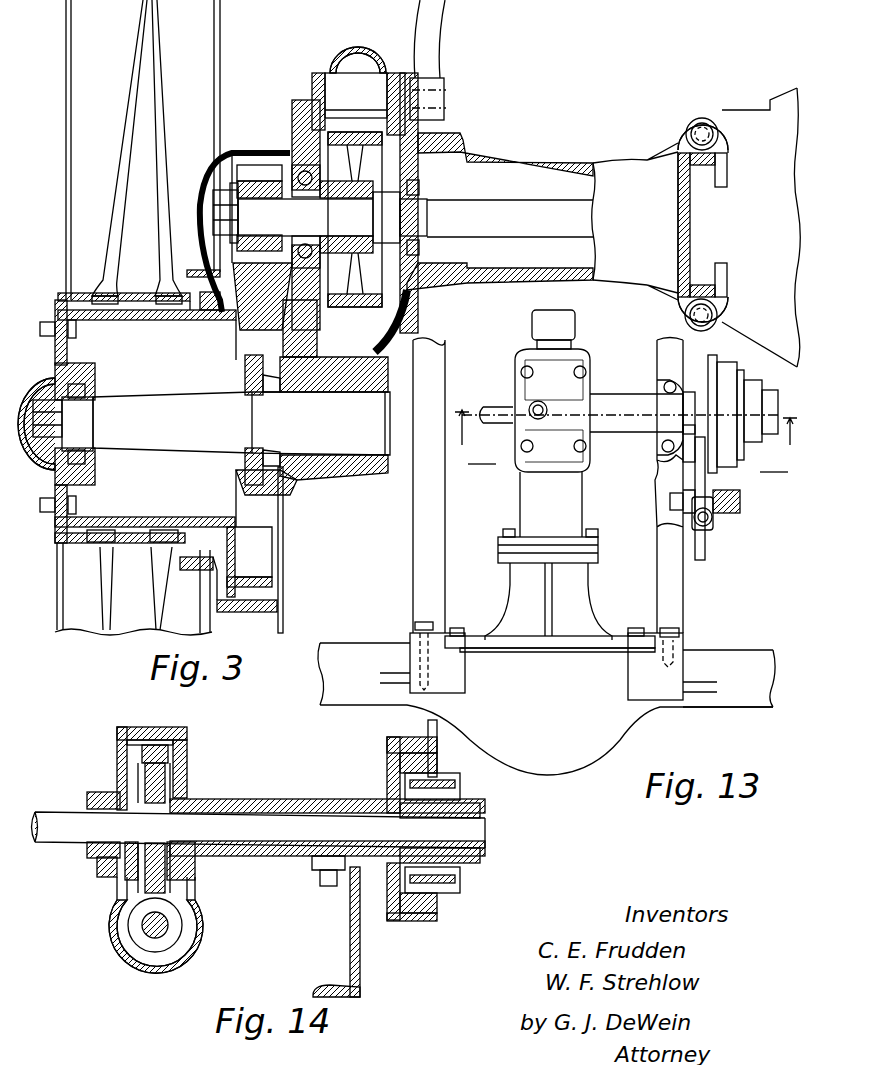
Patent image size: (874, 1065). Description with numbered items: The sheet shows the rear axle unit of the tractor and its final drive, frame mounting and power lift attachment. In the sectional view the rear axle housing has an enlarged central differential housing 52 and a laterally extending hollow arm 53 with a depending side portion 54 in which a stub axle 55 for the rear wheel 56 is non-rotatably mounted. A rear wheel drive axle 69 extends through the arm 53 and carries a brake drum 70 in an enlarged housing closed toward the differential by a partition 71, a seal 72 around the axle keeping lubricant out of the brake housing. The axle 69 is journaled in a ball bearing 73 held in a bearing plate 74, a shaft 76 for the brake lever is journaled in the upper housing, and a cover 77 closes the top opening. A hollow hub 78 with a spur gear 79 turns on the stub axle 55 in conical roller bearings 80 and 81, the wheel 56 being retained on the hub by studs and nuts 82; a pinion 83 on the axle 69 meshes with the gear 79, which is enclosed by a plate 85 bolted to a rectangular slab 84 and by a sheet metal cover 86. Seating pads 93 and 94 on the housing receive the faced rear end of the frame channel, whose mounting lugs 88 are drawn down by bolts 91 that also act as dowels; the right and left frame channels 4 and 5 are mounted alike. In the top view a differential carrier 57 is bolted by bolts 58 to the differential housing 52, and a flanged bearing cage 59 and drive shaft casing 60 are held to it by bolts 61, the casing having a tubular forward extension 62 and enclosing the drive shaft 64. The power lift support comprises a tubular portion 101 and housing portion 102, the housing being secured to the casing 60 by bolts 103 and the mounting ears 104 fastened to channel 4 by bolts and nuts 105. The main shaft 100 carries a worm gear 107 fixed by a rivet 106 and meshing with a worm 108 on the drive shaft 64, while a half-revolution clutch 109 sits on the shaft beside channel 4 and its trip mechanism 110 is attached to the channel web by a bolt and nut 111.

In FIG. 3, the right frame channel 4 is at (678, 252).
In FIG. 13, the right frame channel 4 is at (683, 592).
In FIG. 14, the right frame channel 4 is at (362, 975).
In FIG. 13, the left frame channel 5 is at (412, 564).
In FIG. 3, the differential housing 52 is at (775, 98).
In FIG. 13, the differential housing 52 is at (558, 770).
In FIG. 3, the hollow arm 53 is at (580, 165).
In FIG. 13, the hollow arm 53 is at (352, 645).
In FIG. 3, the depending side portion 54 is at (348, 474).
In FIG. 3, the stub axle 55 is at (190, 397).
In FIG. 3, the rear wheel 56 is at (112, 33).
In FIG. 13, the differential carrier 57 is at (588, 595).
In FIG. 13, the bolts 58 is at (636, 632).
In FIG. 13, the flanged bearing cage 59 is at (598, 548).
In FIG. 13, the drive shaft casing 60 is at (580, 493).
In FIG. 14, the drive shaft casing 60 is at (110, 918).
In FIG. 13, the bolts 61 is at (592, 533).
In FIG. 13, the tubular forward extension 62 is at (578, 328).
In FIG. 14, the drive shaft 64 is at (142, 932).
In FIG. 3, the rear wheel drive axle 69 is at (535, 210).
In FIG. 3, the brake drum 70 is at (348, 306).
In FIG. 3, the partition 71 is at (418, 172).
In FIG. 3, the seal 72 is at (420, 248).
In FIG. 3, the ball bearing 73 is at (306, 186).
In FIG. 3, the bearing plate 74 is at (300, 104).
In FIG. 3, the shaft 76 is at (446, 100).
In FIG. 3, the cover 77 is at (365, 52).
In FIG. 3, the hollow hub 78 is at (155, 517).
In FIG. 3, the spur gear 79 is at (253, 573).
In FIG. 3, the conical roller bearing 80 is at (92, 398).
In FIG. 3, the conical roller bearing 81 is at (256, 378).
In FIG. 3, the studs and nuts 82 is at (44, 330).
In FIG. 3, the pinion 83 is at (254, 165).
In FIG. 3, the rectangular slab 84 is at (292, 498).
In FIG. 3, the plate 85 is at (284, 541).
In FIG. 3, the sheet metal cover 86 is at (243, 611).
In FIG. 13, the mounting lug 88 is at (412, 644).
In FIG. 3, the mounting bolt 91 is at (685, 130).
In FIG. 13, the mounting bolt 91 is at (424, 624).
In FIG. 3, the seating pad 93 is at (722, 134).
In FIG. 3, the seating pad 94 is at (715, 325).
In FIG. 13, the main shaft 100 is at (488, 408).
In FIG. 14, the main shaft 100 is at (70, 810).
In FIG. 13, the tubular portion 101 is at (617, 425).
In FIG. 14, the tubular portion 101 is at (268, 800).
In FIG. 13, the housing portion 102 is at (528, 366).
In FIG. 14, the housing portion 102 is at (188, 752).
In FIG. 13, the bolts 103 is at (586, 377).
In FIG. 13, the mounting ears 104 is at (662, 388).
In FIG. 13, the bolts and nuts 105 is at (662, 452).
In FIG. 14, the bolts and nuts 105 is at (330, 887).
In FIG. 14, the rivet 106 is at (118, 878).
In FIG. 14, the worm gear 107 is at (172, 880).
In FIG. 14, the worm 108 is at (172, 930).
In FIG. 13, the half-revolution clutch 109 is at (778, 486).
In FIG. 14, the half-revolution clutch 109 is at (508, 886).
In FIG. 13, the trip mechanism 110 is at (722, 512).
In FIG. 13, the bolt and nut 111 is at (742, 500).